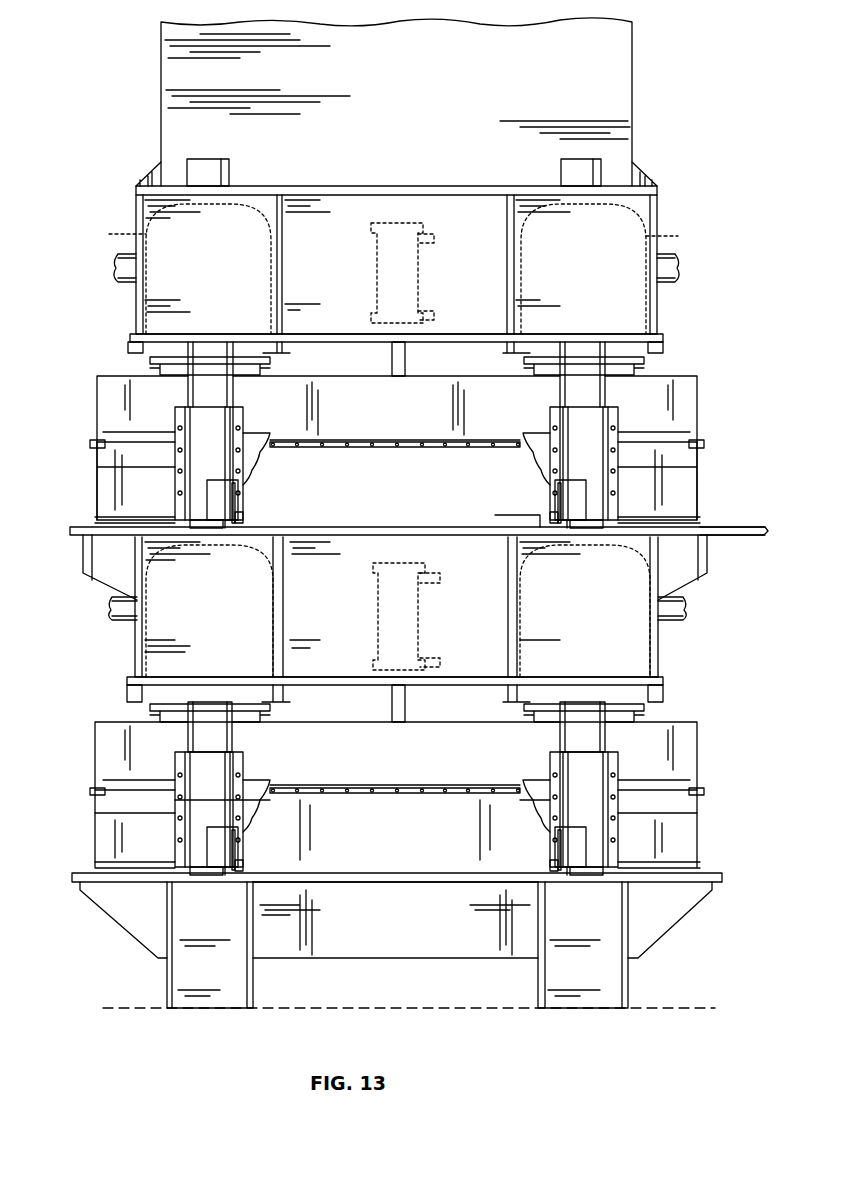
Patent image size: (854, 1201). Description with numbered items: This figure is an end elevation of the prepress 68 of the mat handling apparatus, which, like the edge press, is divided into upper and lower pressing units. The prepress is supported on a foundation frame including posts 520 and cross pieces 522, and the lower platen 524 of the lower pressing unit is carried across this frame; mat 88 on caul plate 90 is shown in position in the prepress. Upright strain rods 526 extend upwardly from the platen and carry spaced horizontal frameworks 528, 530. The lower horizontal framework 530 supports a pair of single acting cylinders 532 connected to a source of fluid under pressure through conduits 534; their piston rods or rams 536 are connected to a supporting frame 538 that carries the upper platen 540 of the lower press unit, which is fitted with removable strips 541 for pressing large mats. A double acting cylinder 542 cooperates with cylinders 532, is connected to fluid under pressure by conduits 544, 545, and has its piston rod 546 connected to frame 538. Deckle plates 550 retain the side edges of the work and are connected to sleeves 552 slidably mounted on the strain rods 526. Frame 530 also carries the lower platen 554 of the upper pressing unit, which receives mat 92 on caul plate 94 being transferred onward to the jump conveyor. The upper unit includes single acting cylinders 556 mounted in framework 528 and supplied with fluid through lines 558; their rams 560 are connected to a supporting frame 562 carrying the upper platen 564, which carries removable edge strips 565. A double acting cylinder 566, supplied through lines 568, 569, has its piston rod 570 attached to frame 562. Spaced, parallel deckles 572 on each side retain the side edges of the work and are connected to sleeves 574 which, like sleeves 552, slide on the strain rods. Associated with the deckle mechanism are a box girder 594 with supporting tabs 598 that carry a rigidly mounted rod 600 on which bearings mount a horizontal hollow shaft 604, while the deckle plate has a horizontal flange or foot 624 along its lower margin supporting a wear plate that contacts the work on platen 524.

The prepress 68 is at (255, 1040).
The upright strain rods 526 is at (229, 170).
The horizontal framework 528 is at (136, 214).
The single acting cylinders 556 is at (387, 269).
The lines 558 is at (116, 282).
The double acting cylinder 566 is at (377, 276).
The line 568 is at (428, 243).
The line 569 is at (430, 311).
The rams 560 is at (150, 360).
The supporting frame 562 is at (97, 398).
The piston rod 570 is at (405, 360).
The sleeves 574 is at (175, 420).
The removable edge strips 565 is at (90, 442).
The upper platen 564 is at (97, 448).
The deckles 572 is at (97, 486).
The horizontal flange or foot 624 is at (95, 520).
The box girder 594 is at (222, 486).
The supporting tabs 598 is at (247, 490).
The horizontal hollow shaft 604 is at (243, 518).
The rod 600 is at (227, 528).
The lower platen 554 is at (392, 518).
The mat 92 is at (505, 515).
The caul plate 94 is at (495, 525).
The lower horizontal framework 530 is at (135, 640).
The single acting cylinders 532 is at (146, 664).
The conduits 534 is at (112, 620).
The double acting cylinder 542 is at (378, 612).
The conduit 544 is at (432, 583).
The conduit 545 is at (432, 658).
The piston rod 546 is at (405, 705).
The piston rods or rams 536 is at (160, 716).
The supporting frame 538 is at (95, 758).
The sleeves 552 is at (243, 764).
The upper platen 540 is at (95, 796).
The removable strips 541 is at (90, 791).
The deckle plates 550 is at (95, 837).
The mat 88 is at (417, 842).
The lower platen 524 is at (72, 878).
The caul plate 90 is at (400, 882).
The cross pieces 522 is at (395, 958).
The posts 520 is at (253, 992).